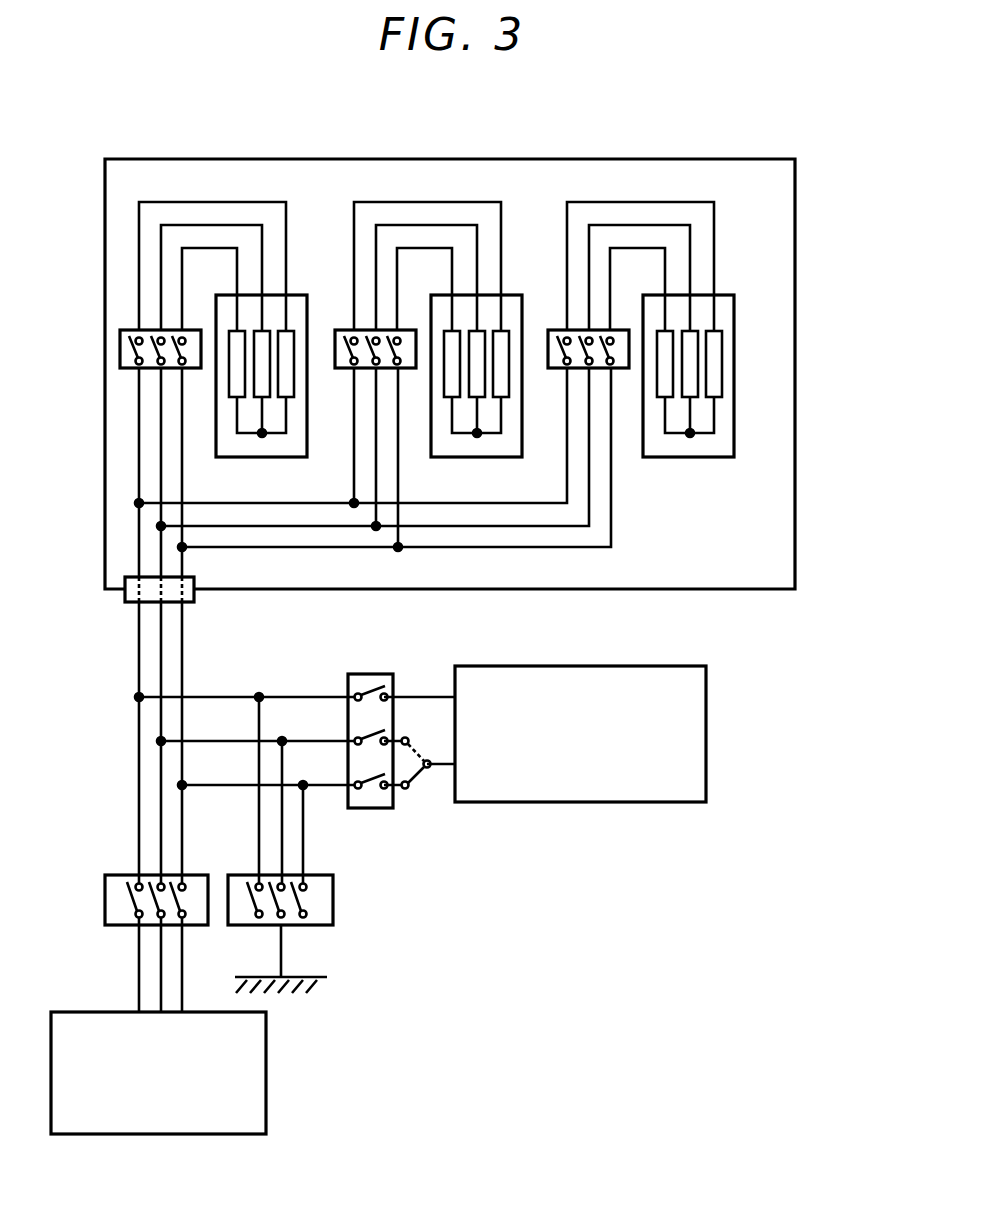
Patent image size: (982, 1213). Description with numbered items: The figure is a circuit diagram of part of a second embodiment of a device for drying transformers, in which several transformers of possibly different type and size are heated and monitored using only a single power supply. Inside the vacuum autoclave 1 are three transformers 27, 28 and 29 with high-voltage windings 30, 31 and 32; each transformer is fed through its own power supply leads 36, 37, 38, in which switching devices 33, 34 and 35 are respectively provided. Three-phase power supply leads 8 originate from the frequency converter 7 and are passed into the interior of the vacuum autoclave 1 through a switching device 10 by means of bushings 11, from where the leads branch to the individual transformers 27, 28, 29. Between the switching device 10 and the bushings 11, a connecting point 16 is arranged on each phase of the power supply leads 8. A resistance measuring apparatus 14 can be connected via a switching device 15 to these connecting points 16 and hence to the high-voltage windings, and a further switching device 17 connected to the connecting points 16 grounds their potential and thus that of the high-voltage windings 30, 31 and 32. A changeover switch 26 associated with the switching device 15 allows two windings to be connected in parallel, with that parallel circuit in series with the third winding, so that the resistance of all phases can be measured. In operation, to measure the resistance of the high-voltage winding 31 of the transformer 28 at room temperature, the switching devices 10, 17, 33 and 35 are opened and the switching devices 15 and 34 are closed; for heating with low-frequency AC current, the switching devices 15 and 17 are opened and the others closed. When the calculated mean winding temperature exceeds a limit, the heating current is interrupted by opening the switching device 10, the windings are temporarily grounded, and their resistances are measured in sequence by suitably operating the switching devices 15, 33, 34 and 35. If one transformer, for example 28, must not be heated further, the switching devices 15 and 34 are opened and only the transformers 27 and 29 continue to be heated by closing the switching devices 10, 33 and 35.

The vacuum autoclave 1 is at (795, 360).
The frequency converter 7 is at (266, 1070).
The power supply leads 8 is at (182, 836).
The switching device 10 is at (105, 927).
The bushings 11 is at (125, 597).
The resistance measuring apparatus 14 is at (706, 735).
The switching device 15 is at (373, 809).
The connecting points 16 is at (182, 785).
The switching device 17 is at (333, 927).
The changeover switch 26 is at (414, 788).
The transformer 27 is at (297, 295).
The transformer 28 is at (513, 295).
The transformer 29 is at (724, 295).
The high-voltage winding 30 is at (288, 331).
The high-voltage winding 31 is at (503, 331).
The high-voltage winding 32 is at (716, 331).
The switching device 33 is at (124, 369).
The switching device 34 is at (344, 370).
The switching device 35 is at (560, 370).
The power supply leads 36 is at (222, 248).
The power supply leads 37 is at (445, 248).
The power supply leads 38 is at (652, 248).